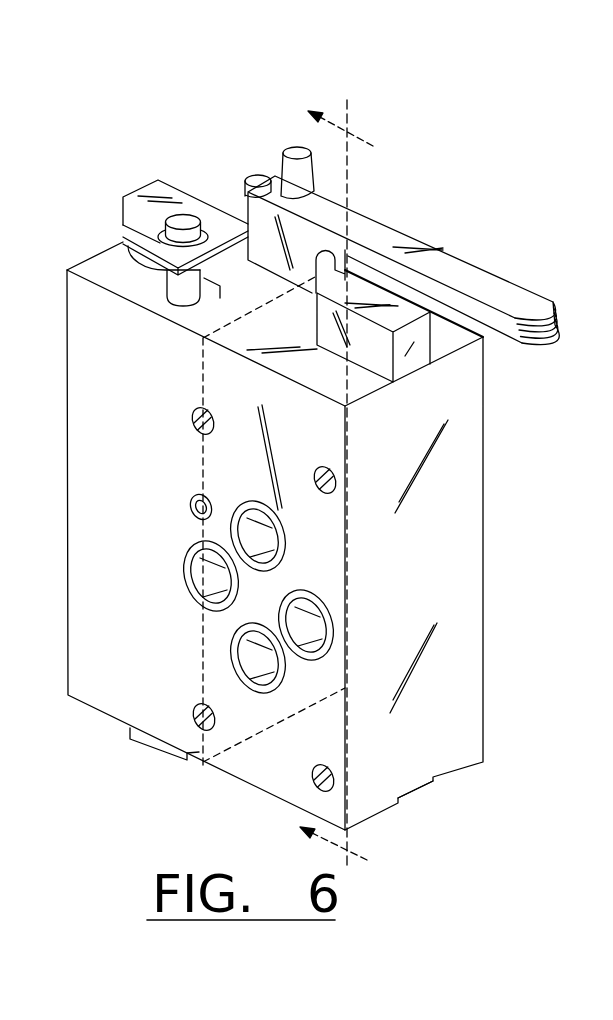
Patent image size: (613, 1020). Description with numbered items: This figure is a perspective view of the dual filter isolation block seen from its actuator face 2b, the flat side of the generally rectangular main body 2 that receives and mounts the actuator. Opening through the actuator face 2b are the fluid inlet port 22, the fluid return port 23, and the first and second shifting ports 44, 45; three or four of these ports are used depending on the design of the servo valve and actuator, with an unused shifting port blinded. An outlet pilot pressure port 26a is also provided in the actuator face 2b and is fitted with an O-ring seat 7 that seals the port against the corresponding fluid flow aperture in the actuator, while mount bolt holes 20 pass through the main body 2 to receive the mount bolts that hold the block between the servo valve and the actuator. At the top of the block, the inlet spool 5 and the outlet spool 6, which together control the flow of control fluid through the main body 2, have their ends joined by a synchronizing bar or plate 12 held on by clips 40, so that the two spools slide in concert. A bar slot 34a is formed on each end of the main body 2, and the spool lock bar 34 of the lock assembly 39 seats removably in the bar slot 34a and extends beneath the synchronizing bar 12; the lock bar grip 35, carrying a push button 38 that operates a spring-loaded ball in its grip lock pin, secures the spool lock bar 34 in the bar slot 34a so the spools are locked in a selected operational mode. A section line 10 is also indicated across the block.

The main body 2 is at (490, 631).
The actuator face 2b is at (143, 532).
The inlet spool 5 is at (181, 296).
The outlet spool 6 is at (260, 170).
The O-ring seat 7 is at (302, 595).
The section line 10 is at (350, 498).
The synchronizing bar 12 is at (217, 207).
The mount bolt holes 20 is at (314, 477).
The fluid inlet port 22 is at (212, 568).
The fluid return port 23 is at (318, 610).
The outlet pilot pressure port 26a is at (196, 500).
The spool lock bar 34 is at (133, 197).
The bar slot 34a is at (222, 300).
The lock bar grip 35 is at (477, 282).
The push button 38 is at (313, 177).
The lock assembly 39 is at (434, 181).
The clips 40 is at (128, 241).
The first shifting port 44 is at (250, 667).
The second shifting port 45 is at (243, 540).